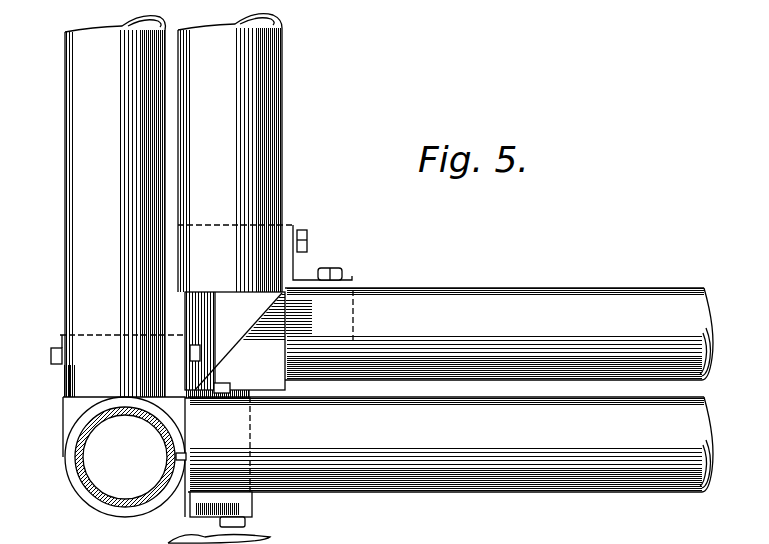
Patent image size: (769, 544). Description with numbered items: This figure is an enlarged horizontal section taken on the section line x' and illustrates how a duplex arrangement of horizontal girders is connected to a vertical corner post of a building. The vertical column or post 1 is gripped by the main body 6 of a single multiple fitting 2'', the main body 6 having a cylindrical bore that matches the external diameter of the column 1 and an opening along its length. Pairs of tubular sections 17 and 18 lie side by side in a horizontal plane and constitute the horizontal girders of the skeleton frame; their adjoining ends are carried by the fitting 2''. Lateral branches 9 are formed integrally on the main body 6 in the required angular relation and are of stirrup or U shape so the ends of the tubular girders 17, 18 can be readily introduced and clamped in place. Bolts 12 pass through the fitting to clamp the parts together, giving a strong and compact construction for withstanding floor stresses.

The tubular column 1 is at (132, 462).
The multiple fitting 2'' is at (98, 457).
The main body of the fitting 6 is at (80, 492).
The lateral branches 9 is at (350, 278).
The bolt 12 is at (50, 357).
The tubular section 17 is at (386, 265).
The tubular section 18 is at (445, 197).
The section line x' is at (278, 536).